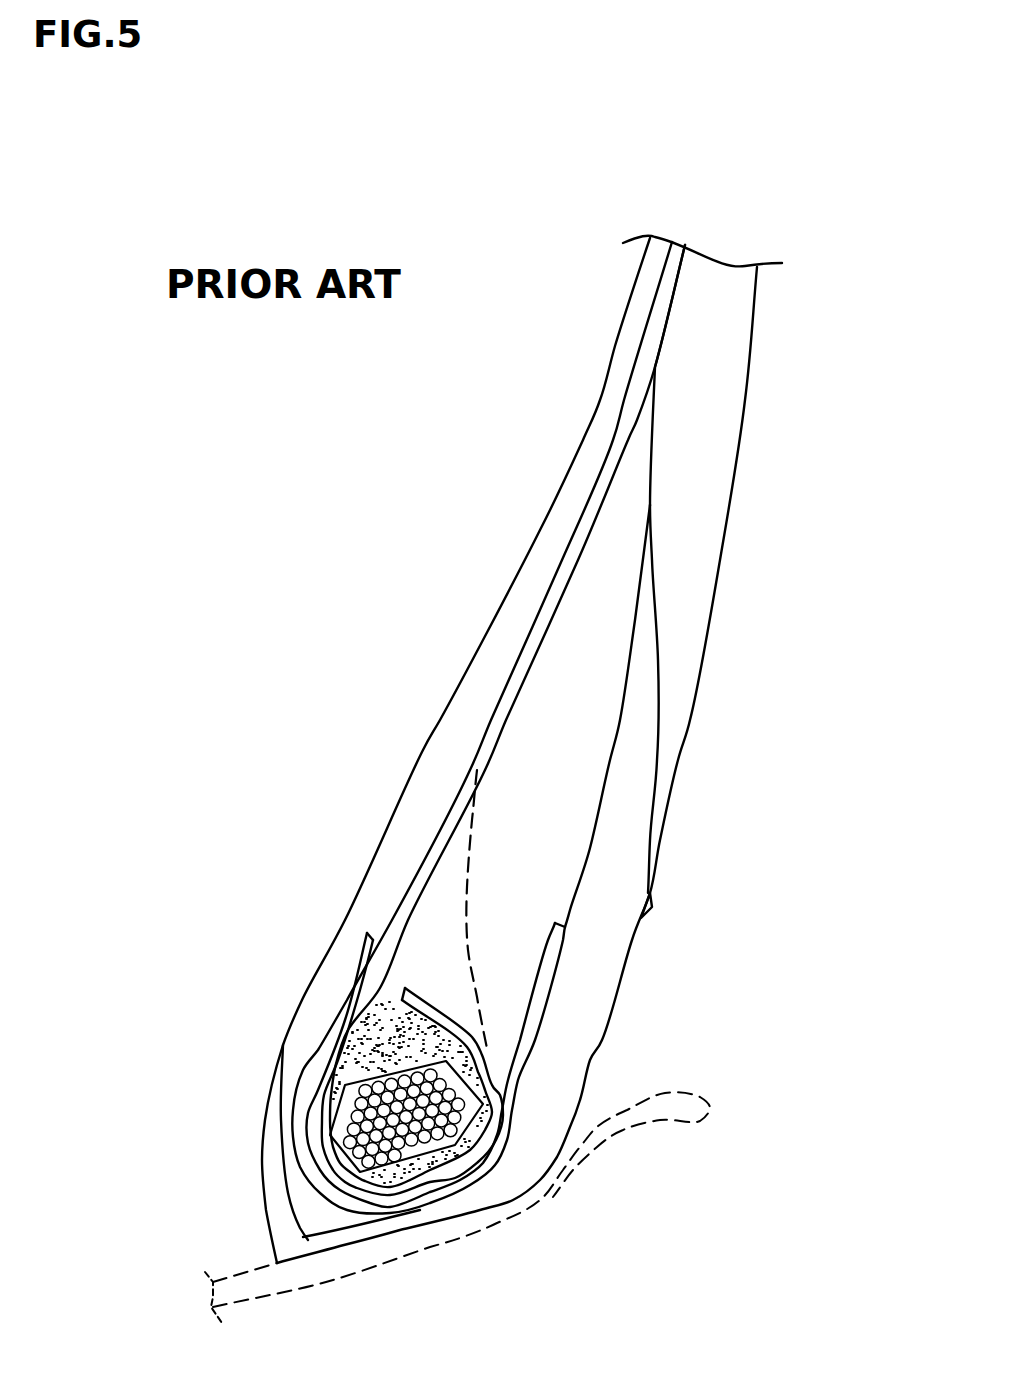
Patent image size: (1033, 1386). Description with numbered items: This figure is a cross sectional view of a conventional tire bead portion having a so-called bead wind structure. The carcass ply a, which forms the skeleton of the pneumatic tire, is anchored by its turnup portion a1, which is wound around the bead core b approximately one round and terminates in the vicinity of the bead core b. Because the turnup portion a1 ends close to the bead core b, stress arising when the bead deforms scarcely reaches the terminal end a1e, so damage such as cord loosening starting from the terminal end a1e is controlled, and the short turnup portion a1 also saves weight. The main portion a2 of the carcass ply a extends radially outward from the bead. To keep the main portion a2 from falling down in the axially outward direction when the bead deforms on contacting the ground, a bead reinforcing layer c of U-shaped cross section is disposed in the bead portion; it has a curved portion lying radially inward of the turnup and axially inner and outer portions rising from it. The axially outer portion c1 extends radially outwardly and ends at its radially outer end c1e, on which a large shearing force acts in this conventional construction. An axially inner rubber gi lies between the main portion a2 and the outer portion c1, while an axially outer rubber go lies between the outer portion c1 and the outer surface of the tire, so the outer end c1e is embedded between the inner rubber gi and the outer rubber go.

The carcass ply a is at (547, 612).
The turnup portion a1 is at (457, 1020).
The terminal end a1e is at (420, 977).
The main portion a2 is at (498, 707).
The axially inner rubber gi is at (487, 870).
The axially outer rubber go is at (607, 922).
The bead reinforcing layer c is at (667, 375).
The axially outer portion c1 is at (527, 1073).
The radially outer end c1e is at (563, 917).
The bead core b is at (440, 1127).